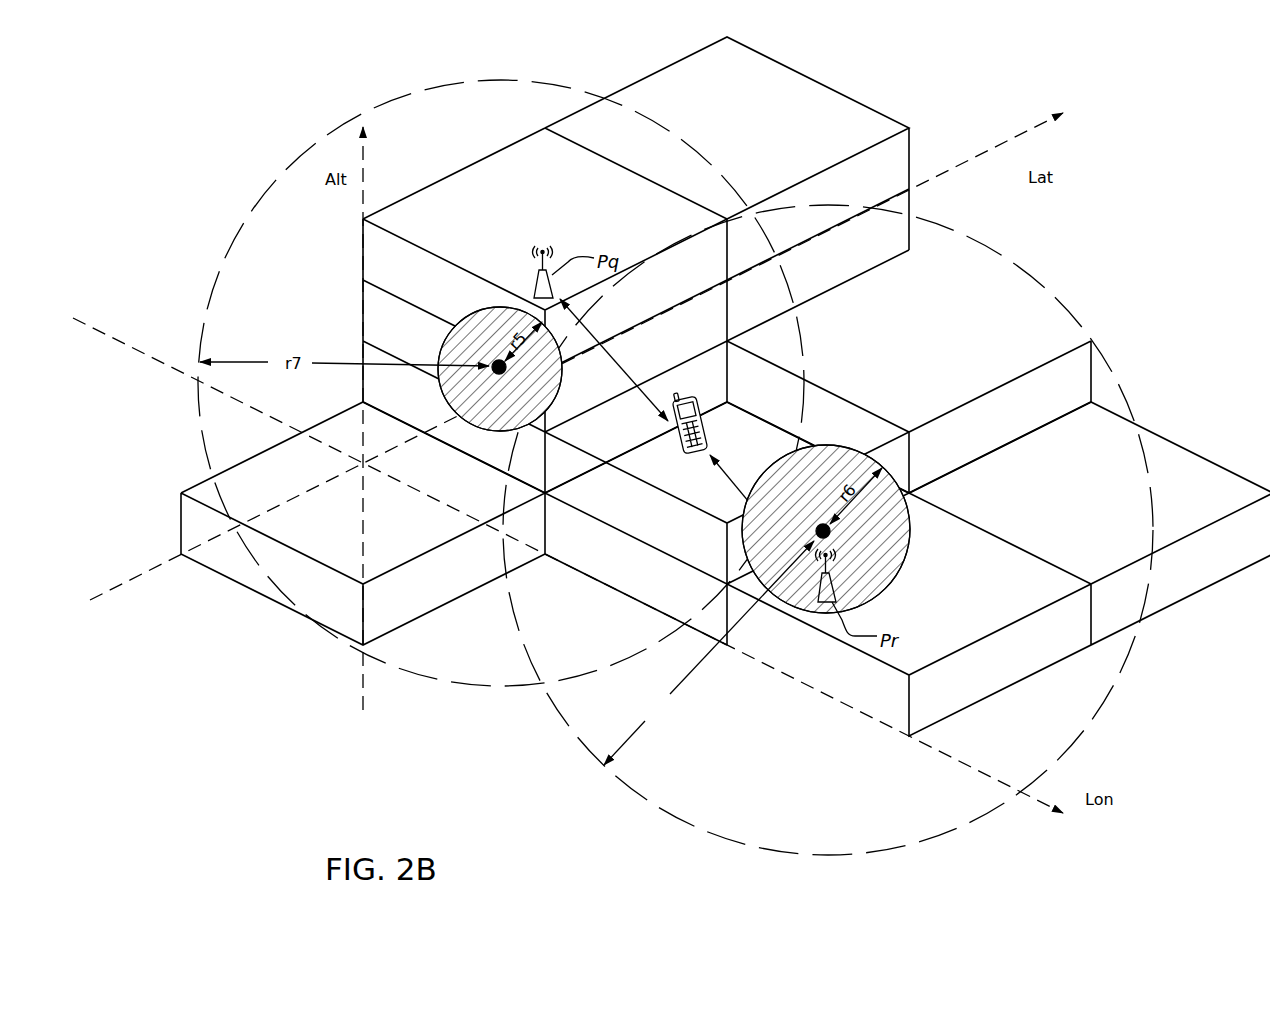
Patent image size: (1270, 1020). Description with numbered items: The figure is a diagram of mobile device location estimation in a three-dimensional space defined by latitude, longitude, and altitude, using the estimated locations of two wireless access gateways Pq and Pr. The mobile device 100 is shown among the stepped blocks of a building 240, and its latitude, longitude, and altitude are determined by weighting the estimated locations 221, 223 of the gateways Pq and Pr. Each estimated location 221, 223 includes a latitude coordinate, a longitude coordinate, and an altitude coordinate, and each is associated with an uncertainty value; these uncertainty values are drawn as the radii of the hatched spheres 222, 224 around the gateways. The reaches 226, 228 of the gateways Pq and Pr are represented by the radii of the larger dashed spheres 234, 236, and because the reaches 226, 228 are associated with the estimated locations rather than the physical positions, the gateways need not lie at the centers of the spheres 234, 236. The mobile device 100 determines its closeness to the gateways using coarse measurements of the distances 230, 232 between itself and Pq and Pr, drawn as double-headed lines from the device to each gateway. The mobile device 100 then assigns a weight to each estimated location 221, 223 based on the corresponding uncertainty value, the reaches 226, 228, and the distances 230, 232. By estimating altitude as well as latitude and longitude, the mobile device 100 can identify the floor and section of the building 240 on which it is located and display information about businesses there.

The mobile device 100 is at (706, 418).
The estimated location 221 is at (548, 450).
The sphere 222 is at (500, 303).
The estimated location 223 is at (850, 572).
The sphere 224 is at (910, 528).
The reach 226 is at (337, 361).
The reach 228 is at (690, 683).
The distance 230 is at (634, 372).
The distance 232 is at (718, 474).
The sphere 234 is at (318, 135).
The sphere 236 is at (1130, 411).
The building 240 is at (660, 71).